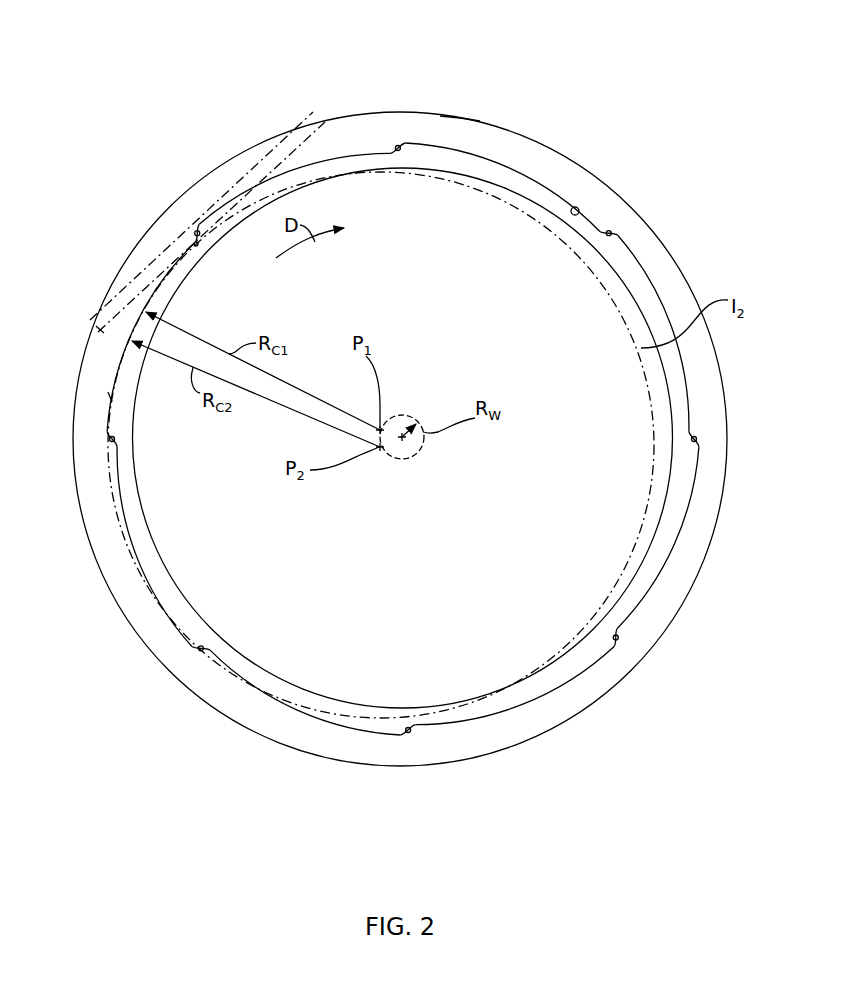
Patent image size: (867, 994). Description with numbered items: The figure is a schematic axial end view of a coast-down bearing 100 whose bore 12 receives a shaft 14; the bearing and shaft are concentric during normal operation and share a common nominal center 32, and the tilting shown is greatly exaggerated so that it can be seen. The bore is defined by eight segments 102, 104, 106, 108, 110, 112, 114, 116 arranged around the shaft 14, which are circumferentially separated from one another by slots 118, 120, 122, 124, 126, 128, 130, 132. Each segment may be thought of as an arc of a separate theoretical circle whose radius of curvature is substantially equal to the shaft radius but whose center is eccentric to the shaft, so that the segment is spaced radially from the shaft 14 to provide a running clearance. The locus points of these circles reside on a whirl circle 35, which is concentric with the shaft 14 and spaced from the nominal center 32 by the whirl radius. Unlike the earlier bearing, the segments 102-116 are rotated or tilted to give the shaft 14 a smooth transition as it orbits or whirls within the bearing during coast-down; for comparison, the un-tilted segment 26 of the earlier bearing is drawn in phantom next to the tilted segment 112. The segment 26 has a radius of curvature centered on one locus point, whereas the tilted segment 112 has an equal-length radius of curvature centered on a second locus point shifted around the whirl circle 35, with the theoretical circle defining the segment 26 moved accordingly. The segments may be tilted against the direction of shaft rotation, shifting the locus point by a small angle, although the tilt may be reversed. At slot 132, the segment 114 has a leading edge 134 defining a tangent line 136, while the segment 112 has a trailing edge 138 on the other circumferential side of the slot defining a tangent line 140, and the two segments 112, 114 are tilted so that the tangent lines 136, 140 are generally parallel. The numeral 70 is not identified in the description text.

The compression ring 70 is at (96, 44).
The shaft 14 is at (494, 190).
The bore 12 is at (580, 212).
The segment 26 is at (110, 398).
The common nominal center 32 is at (407, 447).
The whirl circle 35 is at (422, 452).
The coast-down bearing 100 is at (571, 168).
The segment 102 is at (647, 262).
The segment 104 is at (697, 457).
The segment 106 is at (589, 670).
The segment 108 is at (343, 730).
The segment 110 is at (136, 590).
The segment 112 is at (107, 421).
The segment 114 is at (338, 154).
The segment 116 is at (462, 150).
The slot 118 is at (399, 141).
The slot 120 is at (617, 232).
The slot 122 is at (700, 437).
The slot 124 is at (617, 645).
The slot 126 is at (422, 734).
The slot 128 is at (197, 650).
The slot 130 is at (105, 440).
The slot 132 is at (188, 228).
The leading edge 134 is at (196, 222).
The tangent line 136 is at (253, 170).
The trailing edge 138 is at (196, 248).
The tangent line 140 is at (104, 332).